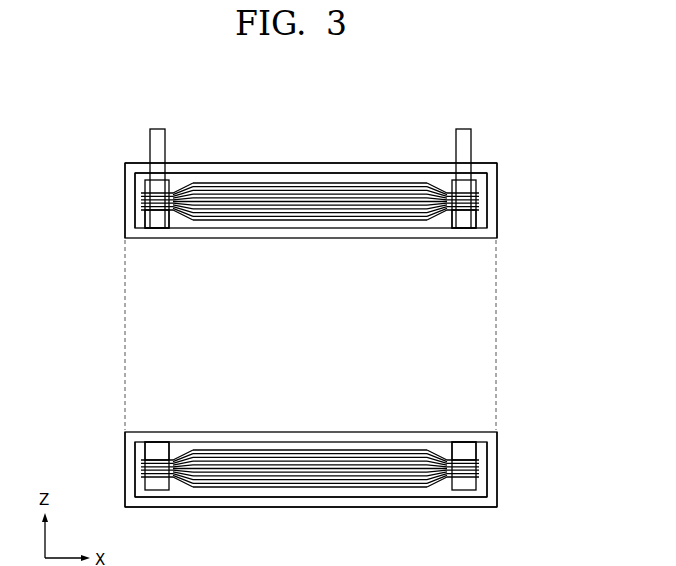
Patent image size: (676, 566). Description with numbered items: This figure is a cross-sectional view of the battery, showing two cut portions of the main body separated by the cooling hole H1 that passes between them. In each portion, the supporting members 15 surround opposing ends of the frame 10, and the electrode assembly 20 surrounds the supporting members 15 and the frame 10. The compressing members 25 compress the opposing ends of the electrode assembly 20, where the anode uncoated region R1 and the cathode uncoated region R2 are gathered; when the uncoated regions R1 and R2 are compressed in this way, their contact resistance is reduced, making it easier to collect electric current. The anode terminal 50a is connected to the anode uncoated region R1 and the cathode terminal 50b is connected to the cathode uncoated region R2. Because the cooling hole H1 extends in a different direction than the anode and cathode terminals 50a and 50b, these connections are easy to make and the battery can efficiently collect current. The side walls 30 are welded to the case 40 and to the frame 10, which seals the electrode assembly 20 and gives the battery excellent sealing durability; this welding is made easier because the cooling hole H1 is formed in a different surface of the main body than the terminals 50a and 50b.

The frame 10 is at (470, 233).
The supporting members 15 is at (153, 220).
The electrode assembly 20 is at (310, 183).
The compressing members 25 is at (147, 182).
The side walls 30 is at (130, 163).
The case 40 is at (238, 163).
The anode terminal 50a is at (158, 129).
The cathode terminal 50b is at (462, 129).
The anode uncoated region R1 is at (130, 199).
The cathode uncoated region R2 is at (492, 200).
The cooling hole H1 is at (134, 336).